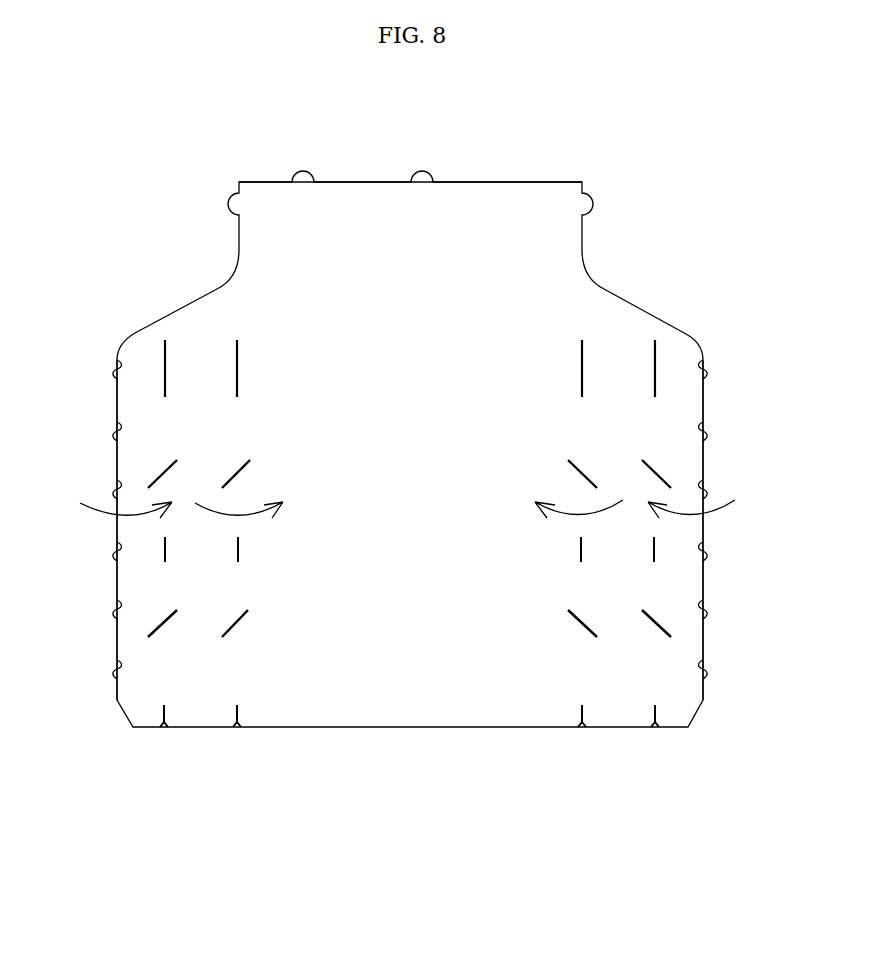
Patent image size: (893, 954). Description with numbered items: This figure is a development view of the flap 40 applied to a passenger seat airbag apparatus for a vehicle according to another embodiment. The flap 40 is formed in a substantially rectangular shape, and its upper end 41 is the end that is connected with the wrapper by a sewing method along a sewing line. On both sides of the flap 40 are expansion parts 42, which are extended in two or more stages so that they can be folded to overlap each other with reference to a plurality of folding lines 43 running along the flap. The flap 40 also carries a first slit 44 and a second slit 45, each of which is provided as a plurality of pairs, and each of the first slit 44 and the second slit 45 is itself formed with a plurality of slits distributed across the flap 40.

The flap 40 is at (524, 137).
The upper end 41 is at (373, 197).
The expansion parts 42 is at (133, 400).
The folding lines 43 is at (165, 371).
The first slit 44 is at (162, 729).
The second slit 45 is at (233, 617).